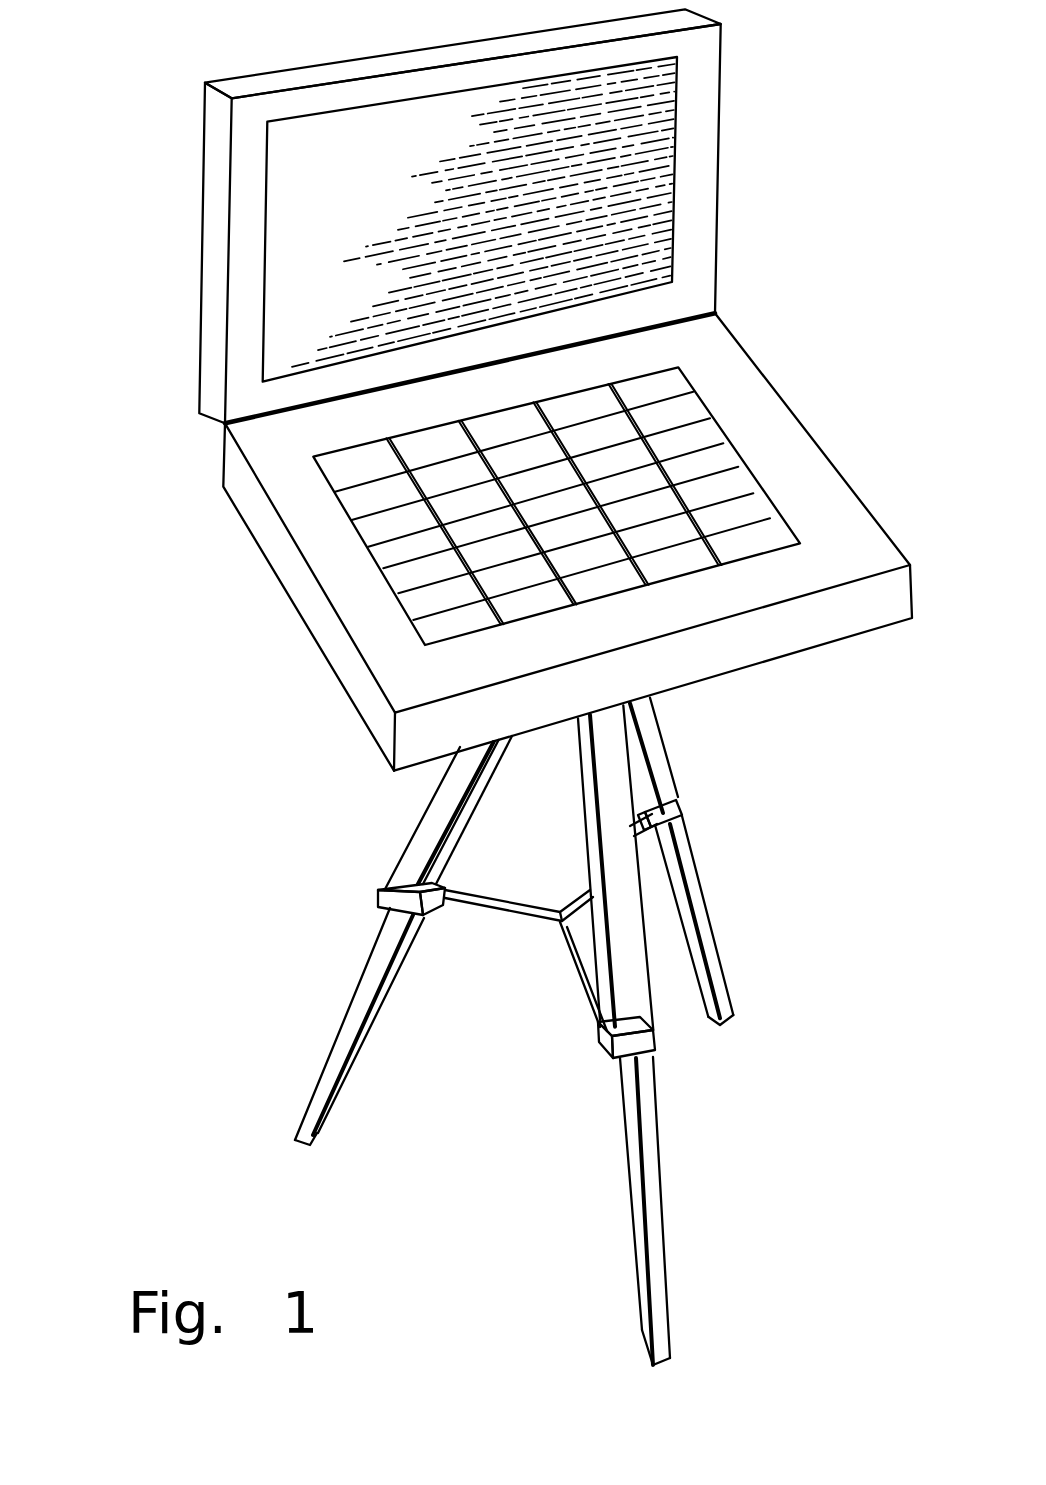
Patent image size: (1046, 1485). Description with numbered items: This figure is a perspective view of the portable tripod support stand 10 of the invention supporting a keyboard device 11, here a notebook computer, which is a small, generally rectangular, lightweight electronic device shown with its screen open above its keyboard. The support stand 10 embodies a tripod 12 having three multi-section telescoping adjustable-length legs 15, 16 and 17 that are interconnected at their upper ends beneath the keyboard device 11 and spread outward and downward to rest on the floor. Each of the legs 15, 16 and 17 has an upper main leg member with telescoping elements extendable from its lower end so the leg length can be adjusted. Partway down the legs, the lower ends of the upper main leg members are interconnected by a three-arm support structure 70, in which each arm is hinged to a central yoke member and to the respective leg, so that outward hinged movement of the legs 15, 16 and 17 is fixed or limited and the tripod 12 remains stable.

The portable tripod support stand 10 is at (519, 1031).
The keyboard device 11 is at (215, 460).
The tripod 12 is at (670, 760).
The telescoping adjustable length leg 15 is at (657, 1180).
The telescoping adjustable length leg 16 is at (347, 1017).
The telescoping adjustable length leg 17 is at (702, 902).
The three-arm support structure 70 is at (557, 930).